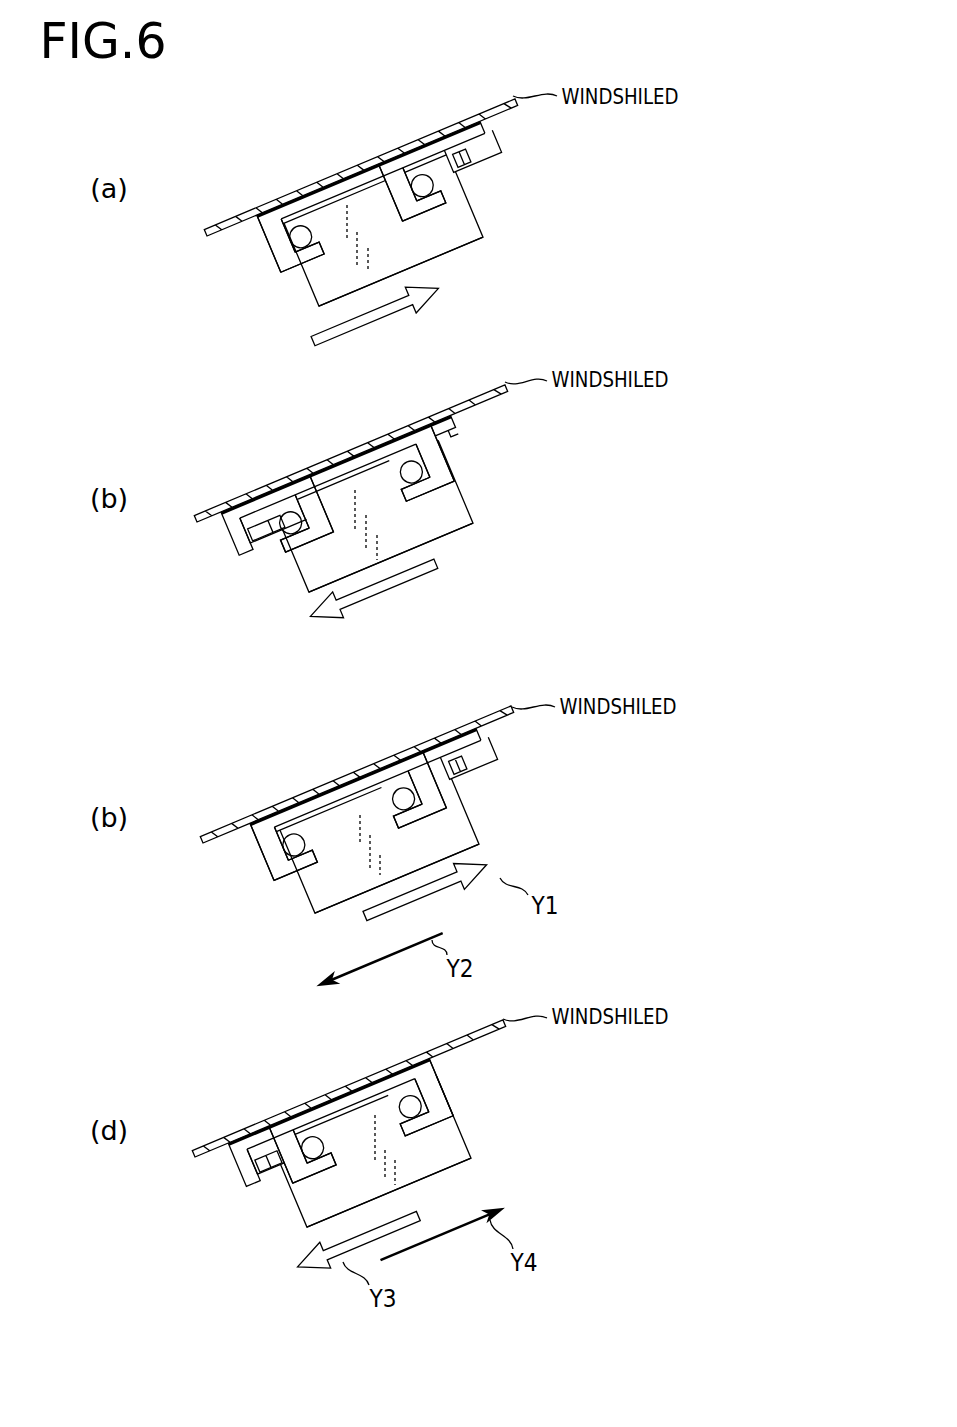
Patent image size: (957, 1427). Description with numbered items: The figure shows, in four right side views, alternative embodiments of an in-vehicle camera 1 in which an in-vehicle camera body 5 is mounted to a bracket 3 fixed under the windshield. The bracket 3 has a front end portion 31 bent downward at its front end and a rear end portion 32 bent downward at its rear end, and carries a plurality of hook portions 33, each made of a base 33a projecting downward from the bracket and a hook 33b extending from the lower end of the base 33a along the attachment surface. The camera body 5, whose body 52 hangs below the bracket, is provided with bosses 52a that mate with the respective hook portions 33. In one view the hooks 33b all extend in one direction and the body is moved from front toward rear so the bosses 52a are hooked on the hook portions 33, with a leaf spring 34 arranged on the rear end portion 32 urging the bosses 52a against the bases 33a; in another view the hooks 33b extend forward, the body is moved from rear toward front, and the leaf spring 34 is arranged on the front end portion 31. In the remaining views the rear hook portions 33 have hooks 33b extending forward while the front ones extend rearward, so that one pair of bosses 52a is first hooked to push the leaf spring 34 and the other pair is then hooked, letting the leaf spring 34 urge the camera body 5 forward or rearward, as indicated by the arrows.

The in-vehicle camera 1 is at (586, 193).
The bracket 3 is at (500, 147).
The in-vehicle camera body 5 is at (480, 232).
The front end portion 31 is at (251, 540).
The rear end portion 32 is at (508, 98).
The hook portion 33 is at (430, 200).
The base 33a is at (393, 183).
The hook 33b is at (427, 205).
The leaf spring 34 is at (470, 152).
The panel body 52 is at (425, 240).
The boss 52a is at (419, 178).